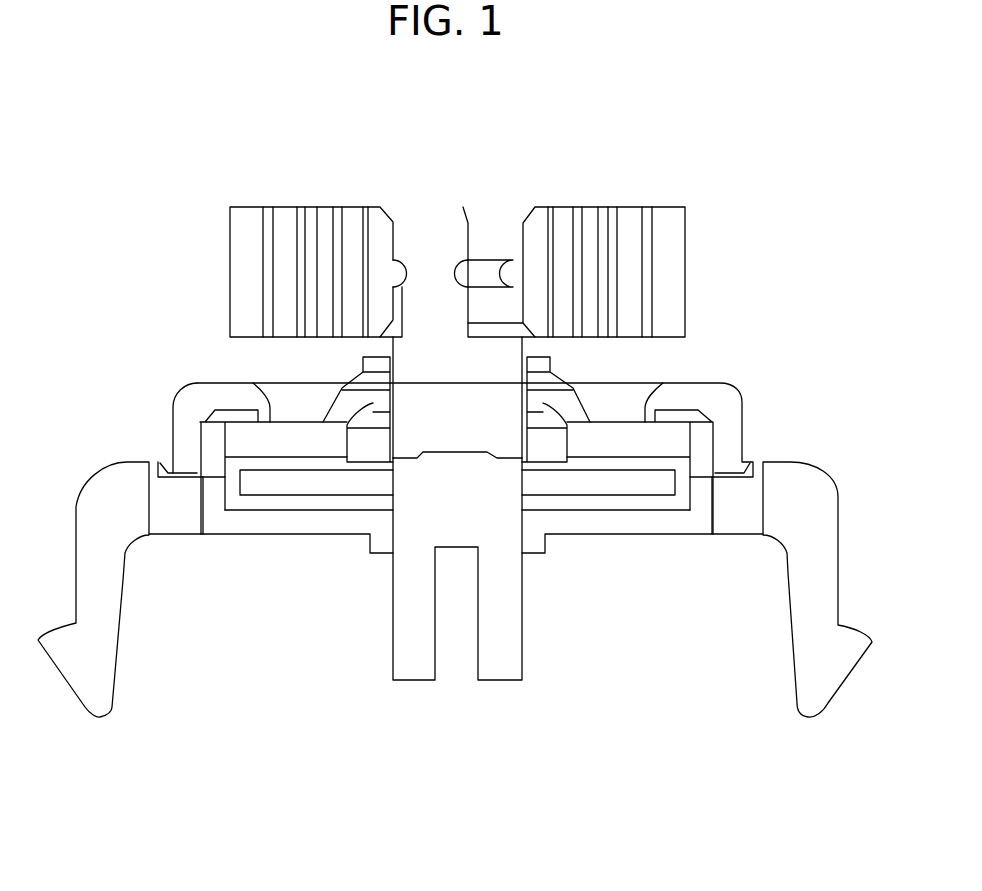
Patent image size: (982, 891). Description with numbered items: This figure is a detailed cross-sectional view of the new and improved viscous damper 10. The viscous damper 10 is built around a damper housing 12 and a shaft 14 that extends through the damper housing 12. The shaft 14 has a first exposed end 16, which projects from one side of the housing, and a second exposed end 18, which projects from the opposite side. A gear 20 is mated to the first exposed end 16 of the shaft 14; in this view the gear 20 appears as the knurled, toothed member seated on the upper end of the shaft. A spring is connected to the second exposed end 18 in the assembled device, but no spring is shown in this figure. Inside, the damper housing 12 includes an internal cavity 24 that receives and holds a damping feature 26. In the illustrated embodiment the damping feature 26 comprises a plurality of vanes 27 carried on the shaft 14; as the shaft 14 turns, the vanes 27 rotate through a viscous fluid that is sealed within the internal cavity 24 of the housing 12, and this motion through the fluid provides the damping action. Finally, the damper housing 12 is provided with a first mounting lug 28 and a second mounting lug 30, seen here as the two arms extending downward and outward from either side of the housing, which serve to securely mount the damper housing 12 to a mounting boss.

The viscous damper 10 is at (760, 163).
The damper housing 12 is at (742, 417).
The shaft 14 is at (428, 392).
The first exposed end 16 is at (443, 240).
The second exposed end 18 is at (402, 640).
The gear 20 is at (598, 235).
The internal cavity 24 is at (613, 462).
The damping feature 26 is at (582, 510).
The vanes 27 is at (287, 487).
The first mounting lug 28 is at (77, 670).
The second mounting lug 30 is at (833, 665).